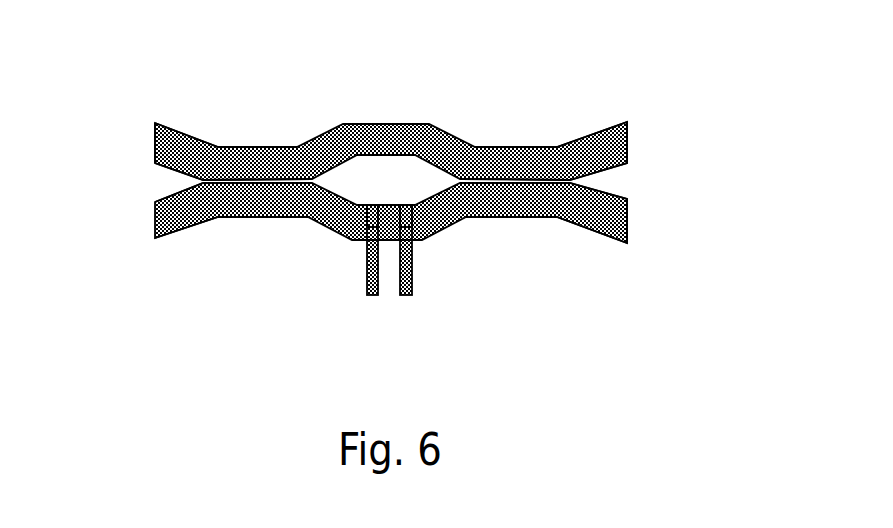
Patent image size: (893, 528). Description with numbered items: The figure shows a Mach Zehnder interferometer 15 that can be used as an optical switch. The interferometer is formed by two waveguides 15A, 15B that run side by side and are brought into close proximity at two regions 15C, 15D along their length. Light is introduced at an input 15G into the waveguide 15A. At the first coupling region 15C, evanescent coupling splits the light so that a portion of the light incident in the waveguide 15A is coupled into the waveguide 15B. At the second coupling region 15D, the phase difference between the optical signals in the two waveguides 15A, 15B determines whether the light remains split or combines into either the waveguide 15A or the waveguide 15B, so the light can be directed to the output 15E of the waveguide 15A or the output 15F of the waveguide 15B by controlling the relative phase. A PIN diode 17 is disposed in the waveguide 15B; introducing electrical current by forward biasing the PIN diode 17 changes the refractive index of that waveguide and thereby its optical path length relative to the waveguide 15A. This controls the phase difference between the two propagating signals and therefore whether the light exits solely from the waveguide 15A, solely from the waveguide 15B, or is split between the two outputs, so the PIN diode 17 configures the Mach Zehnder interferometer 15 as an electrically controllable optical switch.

The Mach Zehnder interferometer 15 is at (383, 133).
The waveguide 15A is at (198, 137).
The waveguide 15B is at (197, 225).
The coupling region 15C is at (278, 178).
The coupling region 15D is at (515, 181).
The output 15E is at (620, 141).
The output 15F is at (612, 213).
The input 15G is at (173, 145).
The PIN diode 17 is at (413, 238).